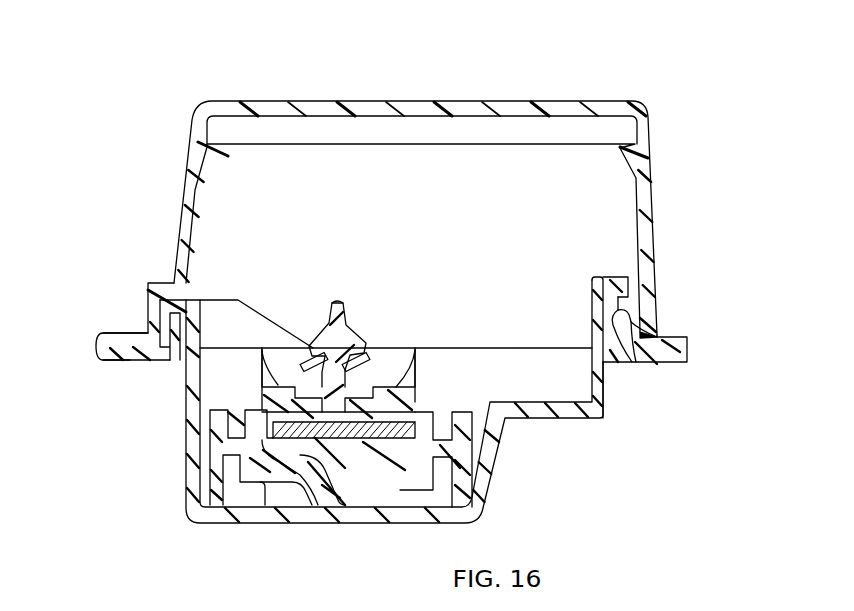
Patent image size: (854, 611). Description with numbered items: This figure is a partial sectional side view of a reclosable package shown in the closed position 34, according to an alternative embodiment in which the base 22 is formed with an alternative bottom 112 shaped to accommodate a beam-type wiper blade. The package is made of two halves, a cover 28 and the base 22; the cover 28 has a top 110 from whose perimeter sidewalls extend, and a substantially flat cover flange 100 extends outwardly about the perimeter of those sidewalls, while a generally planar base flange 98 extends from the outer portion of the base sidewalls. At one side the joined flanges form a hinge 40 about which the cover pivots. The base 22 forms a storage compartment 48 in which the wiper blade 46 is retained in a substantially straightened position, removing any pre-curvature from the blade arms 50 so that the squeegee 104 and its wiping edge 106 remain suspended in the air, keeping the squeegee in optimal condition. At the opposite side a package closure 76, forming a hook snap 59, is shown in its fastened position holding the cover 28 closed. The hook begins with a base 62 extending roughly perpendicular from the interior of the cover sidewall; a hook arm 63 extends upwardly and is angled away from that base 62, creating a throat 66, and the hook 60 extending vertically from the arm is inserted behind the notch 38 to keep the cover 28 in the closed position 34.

The base 22 is at (540, 420).
The cover 28 is at (395, 101).
The closed position 34 is at (131, 104).
The notch 38 is at (657, 337).
The hinge 40 is at (97, 338).
The wiper blade 46 is at (384, 359).
The storage compartment 48 is at (478, 378).
The blade arms 50 is at (262, 445).
The hook snap 59 is at (620, 367).
The hook 60 is at (620, 302).
The base of the hook 62 is at (637, 347).
The hook arm 63 is at (642, 303).
The throat 66 is at (656, 336).
The package closure 76 is at (640, 376).
The base flange 98 is at (115, 362).
The cover flange 100 is at (120, 333).
The squeegee 104 is at (345, 328).
The wiping edge 106 is at (331, 302).
The top 110 is at (320, 101).
The alternative bottom 112 is at (371, 524).